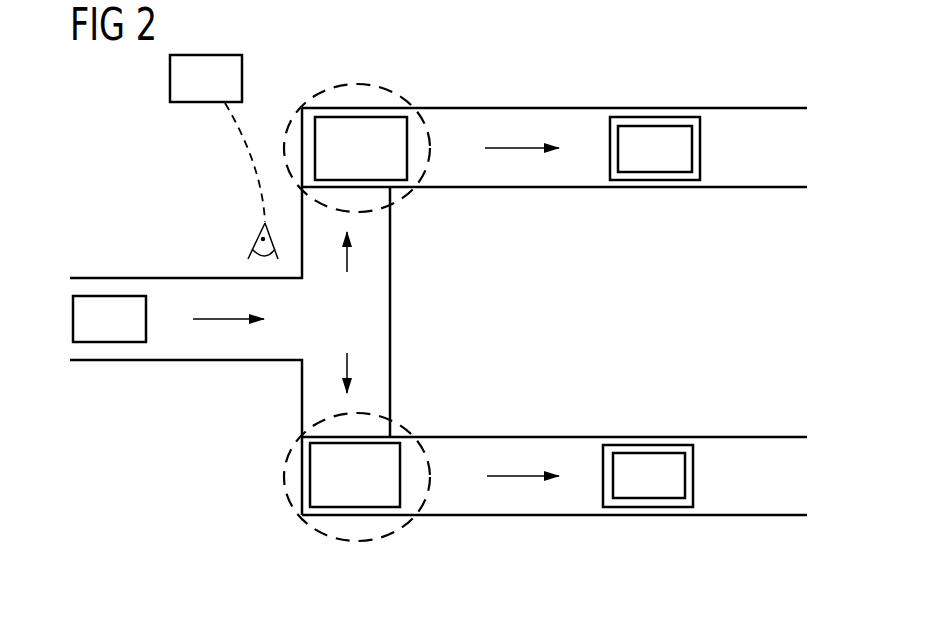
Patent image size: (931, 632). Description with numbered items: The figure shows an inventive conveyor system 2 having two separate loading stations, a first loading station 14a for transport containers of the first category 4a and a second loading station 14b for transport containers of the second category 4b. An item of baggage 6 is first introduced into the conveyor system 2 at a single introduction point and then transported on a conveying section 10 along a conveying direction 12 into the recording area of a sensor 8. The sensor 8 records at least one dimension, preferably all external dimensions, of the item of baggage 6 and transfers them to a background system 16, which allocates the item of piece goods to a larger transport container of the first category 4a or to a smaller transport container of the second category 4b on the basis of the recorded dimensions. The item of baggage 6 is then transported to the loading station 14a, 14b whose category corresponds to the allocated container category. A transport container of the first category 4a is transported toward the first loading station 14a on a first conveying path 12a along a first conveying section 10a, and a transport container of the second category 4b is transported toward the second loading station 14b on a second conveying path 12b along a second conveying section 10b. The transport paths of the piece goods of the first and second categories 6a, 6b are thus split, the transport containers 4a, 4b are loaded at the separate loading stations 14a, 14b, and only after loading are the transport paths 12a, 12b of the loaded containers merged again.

The conveyor system 2 is at (112, 132).
The transport container of the first category 4a is at (407, 150).
The transport container of the second category 4b is at (400, 472).
The item of baggage 6 is at (108, 296).
The item of piece goods of the first category 6a is at (652, 126).
The item of piece goods of the second category 6b is at (647, 453).
The sensor 8 is at (262, 222).
The conveying section 10 is at (175, 278).
The first conveying section 10a is at (468, 107).
The second conveying section 10b is at (468, 436).
The conveying direction 12 is at (237, 322).
The first conveying path 12a is at (348, 247).
The second conveying path 12b is at (348, 378).
The first loading station 14a is at (392, 92).
The second loading station 14b is at (283, 477).
The background system 16 is at (242, 78).